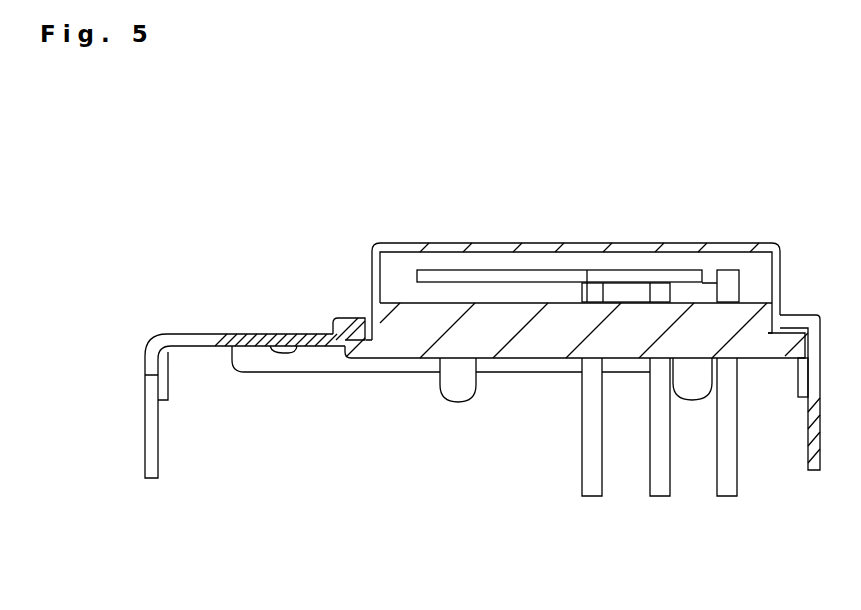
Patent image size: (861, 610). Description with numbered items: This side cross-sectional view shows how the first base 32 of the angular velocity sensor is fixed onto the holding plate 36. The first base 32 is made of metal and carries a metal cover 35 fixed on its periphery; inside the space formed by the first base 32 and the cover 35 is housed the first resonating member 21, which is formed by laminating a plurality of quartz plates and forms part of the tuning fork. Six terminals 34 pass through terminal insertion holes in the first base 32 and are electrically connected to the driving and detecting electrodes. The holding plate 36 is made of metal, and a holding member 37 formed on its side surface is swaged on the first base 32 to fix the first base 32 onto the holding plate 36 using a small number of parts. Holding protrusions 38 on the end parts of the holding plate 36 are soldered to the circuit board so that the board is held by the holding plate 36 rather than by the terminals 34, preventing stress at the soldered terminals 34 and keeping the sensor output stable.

The first resonating member 21 is at (440, 277).
The first base 32 is at (408, 350).
The terminal 34 is at (727, 482).
The cover 35 is at (577, 247).
The holding plate 36 is at (242, 334).
The holding member 37 is at (455, 392).
The holding protrusion 38 is at (153, 468).